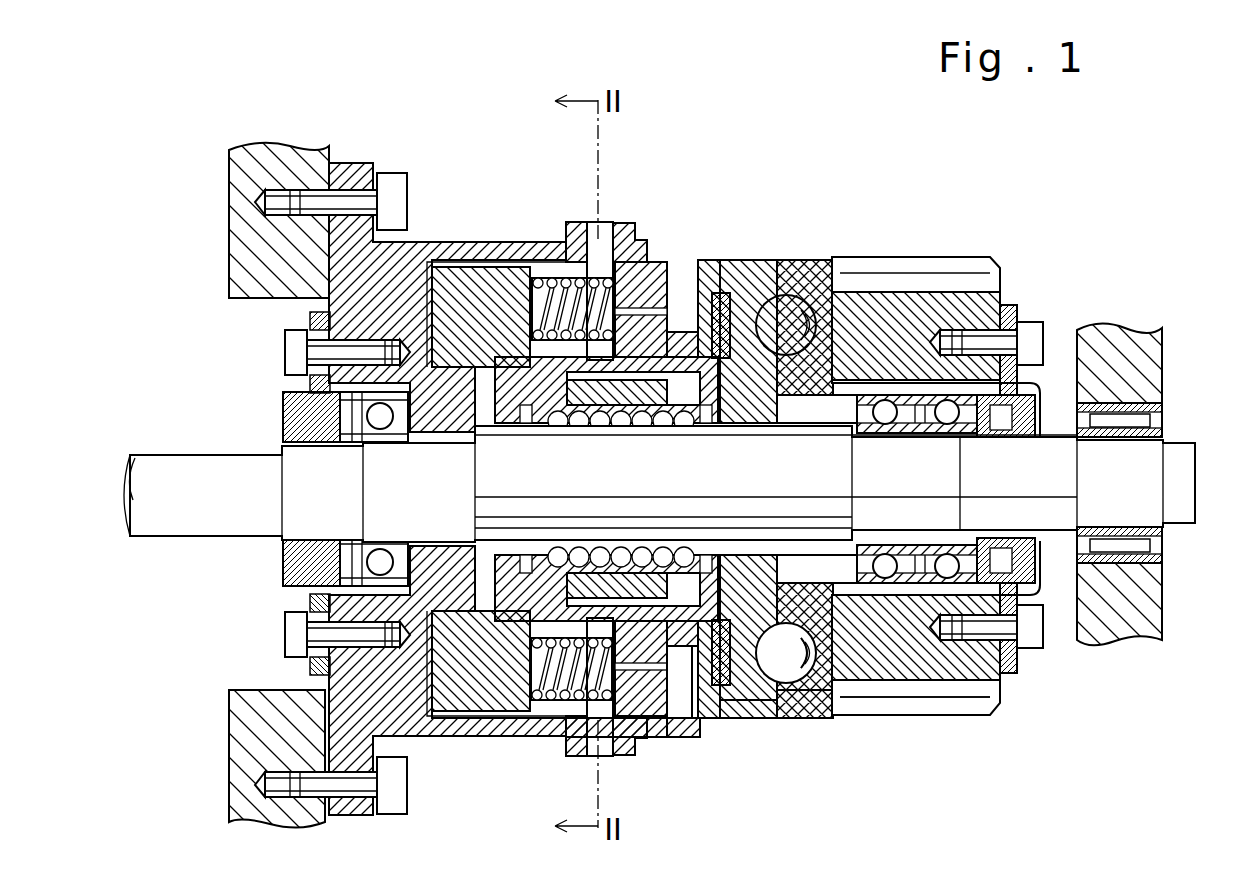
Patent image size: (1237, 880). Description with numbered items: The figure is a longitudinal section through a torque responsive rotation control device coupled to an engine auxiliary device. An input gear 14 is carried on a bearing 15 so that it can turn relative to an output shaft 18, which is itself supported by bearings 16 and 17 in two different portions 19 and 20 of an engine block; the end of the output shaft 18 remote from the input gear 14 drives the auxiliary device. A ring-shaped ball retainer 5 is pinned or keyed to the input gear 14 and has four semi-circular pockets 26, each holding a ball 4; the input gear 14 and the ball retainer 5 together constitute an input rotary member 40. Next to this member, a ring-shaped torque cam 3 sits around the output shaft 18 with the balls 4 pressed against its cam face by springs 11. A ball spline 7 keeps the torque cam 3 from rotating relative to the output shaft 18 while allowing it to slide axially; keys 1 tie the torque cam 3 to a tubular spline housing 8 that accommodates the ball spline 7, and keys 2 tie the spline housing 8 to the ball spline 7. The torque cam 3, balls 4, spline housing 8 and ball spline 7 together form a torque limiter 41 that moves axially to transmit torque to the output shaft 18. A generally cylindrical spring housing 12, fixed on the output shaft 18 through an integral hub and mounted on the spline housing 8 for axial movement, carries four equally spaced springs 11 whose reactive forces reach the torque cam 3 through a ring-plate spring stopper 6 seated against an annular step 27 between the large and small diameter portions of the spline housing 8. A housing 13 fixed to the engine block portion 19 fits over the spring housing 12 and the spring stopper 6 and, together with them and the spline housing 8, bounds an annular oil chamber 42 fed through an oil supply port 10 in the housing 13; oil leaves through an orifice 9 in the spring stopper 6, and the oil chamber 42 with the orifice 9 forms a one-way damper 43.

The keys 1 is at (733, 260).
The keys 2 is at (700, 258).
The torque cam 3 is at (760, 258).
The balls 4 is at (797, 713).
The ball retainer 5 is at (807, 713).
The spring stopper 6 is at (677, 712).
The ball spline 7 is at (648, 727).
The spline housing 8 is at (485, 640).
The orifice 9 is at (664, 340).
The oil supply port 10 is at (604, 247).
The springs 11 is at (537, 242).
The spring housing 12 is at (490, 243).
The housing 13 is at (413, 242).
The input gear 14 is at (937, 257).
The bearing 15 is at (1003, 262).
The bearing 16 is at (1152, 400).
The bearing 17 is at (283, 398).
The output shaft 18 is at (210, 520).
The engine block portion 19 is at (232, 222).
The engine block portion 20 is at (1158, 607).
The semi-circular pockets 26 is at (810, 713).
The annular step 27 is at (668, 713).
The input rotary member 40 is at (941, 726).
The torque limiter 41 is at (754, 738).
The oil chamber 42 is at (565, 243).
The one-way damper 43 is at (577, 712).